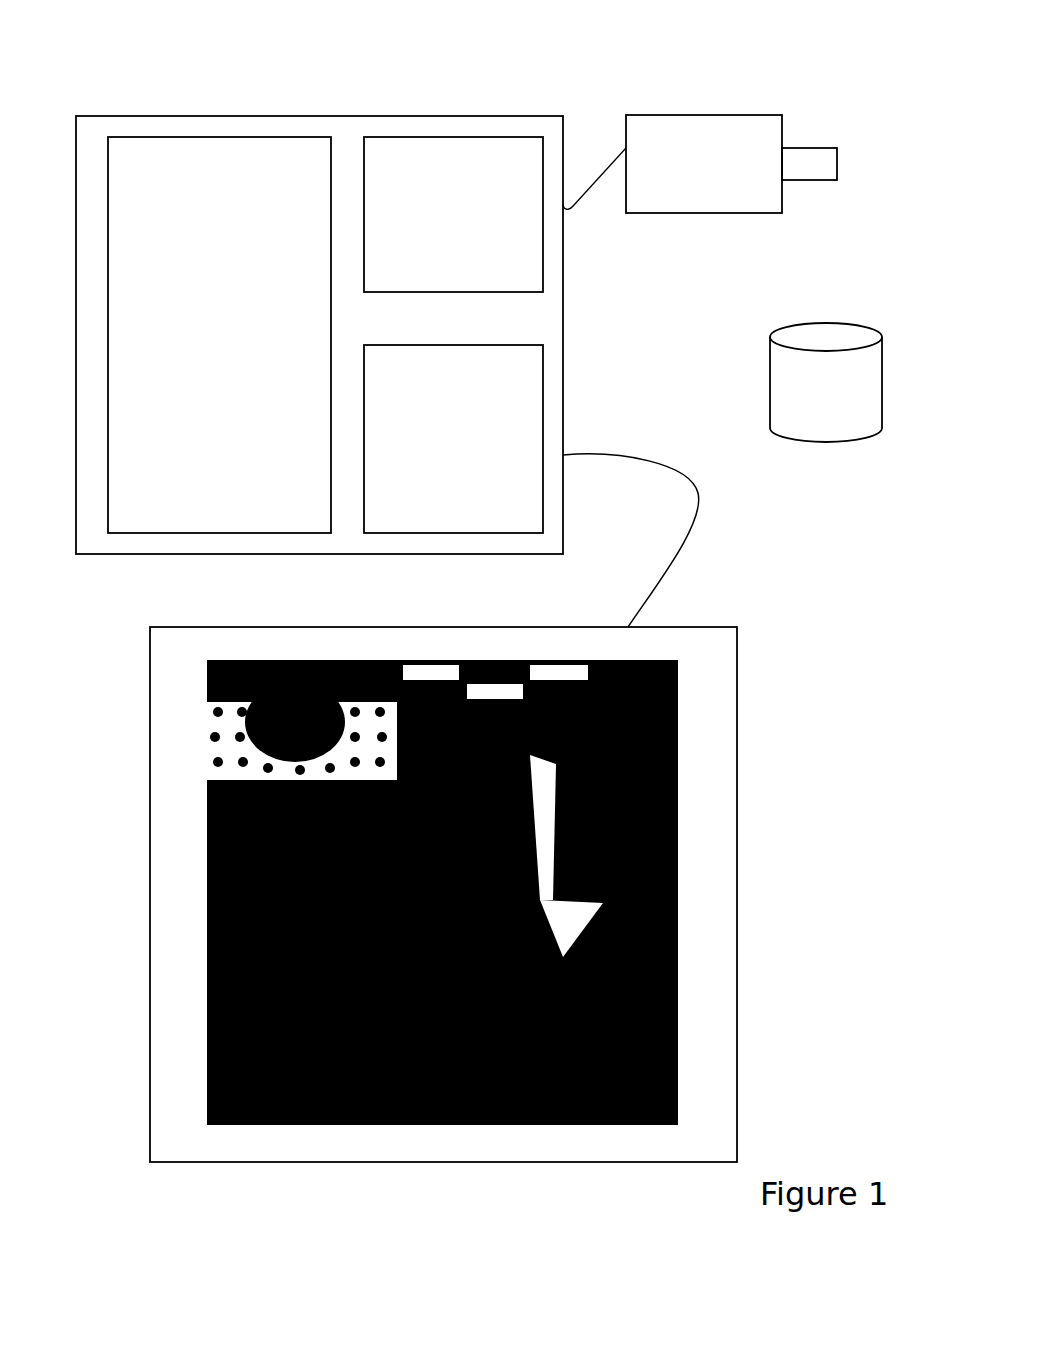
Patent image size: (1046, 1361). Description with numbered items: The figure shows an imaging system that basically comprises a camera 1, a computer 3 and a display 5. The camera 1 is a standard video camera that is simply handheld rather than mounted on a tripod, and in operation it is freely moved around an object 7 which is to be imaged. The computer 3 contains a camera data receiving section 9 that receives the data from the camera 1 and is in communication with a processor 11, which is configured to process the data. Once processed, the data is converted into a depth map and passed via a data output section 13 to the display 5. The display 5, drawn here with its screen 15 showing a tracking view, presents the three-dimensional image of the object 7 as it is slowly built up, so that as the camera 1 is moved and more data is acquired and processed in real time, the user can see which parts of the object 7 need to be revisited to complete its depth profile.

The camera 1 is at (693, 170).
The computer 3 is at (162, 563).
The display 5 is at (162, 823).
The object 7 is at (825, 422).
The camera data receiving section 9 is at (518, 235).
The processor 11 is at (217, 246).
The data output section 13 is at (510, 434).
The screen 15 is at (617, 1140).